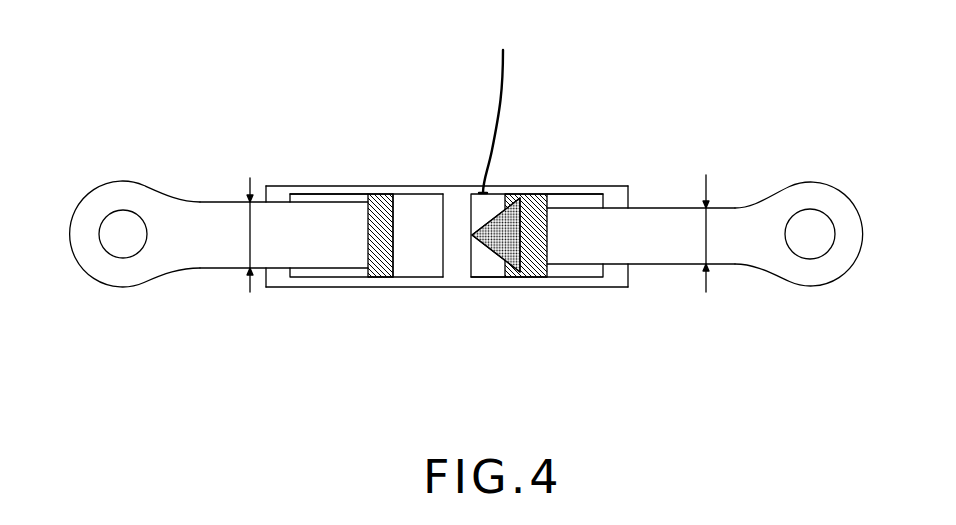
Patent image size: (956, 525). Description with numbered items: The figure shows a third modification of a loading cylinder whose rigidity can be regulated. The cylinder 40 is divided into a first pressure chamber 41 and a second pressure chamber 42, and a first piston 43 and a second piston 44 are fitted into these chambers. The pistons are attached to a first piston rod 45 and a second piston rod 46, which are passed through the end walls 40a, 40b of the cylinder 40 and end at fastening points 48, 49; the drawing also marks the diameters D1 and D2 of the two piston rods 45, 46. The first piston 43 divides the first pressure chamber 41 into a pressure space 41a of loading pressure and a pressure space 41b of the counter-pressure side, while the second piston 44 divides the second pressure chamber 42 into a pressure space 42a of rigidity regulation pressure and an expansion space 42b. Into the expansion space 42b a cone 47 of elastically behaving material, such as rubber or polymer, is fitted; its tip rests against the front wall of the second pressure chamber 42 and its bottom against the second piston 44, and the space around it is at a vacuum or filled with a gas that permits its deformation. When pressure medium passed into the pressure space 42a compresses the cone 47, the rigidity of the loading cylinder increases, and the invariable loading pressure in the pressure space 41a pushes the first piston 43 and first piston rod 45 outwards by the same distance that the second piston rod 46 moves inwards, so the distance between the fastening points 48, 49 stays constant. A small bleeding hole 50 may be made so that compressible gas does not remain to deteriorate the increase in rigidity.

The cylinder 40 is at (457, 198).
The end wall 40a is at (279, 279).
The end wall 40b is at (617, 279).
The first pressure chamber 41 is at (407, 268).
The pressure space of loading pressure 41a is at (414, 234).
The pressure space of counter-pressure side 41b is at (330, 194).
The second pressure chamber 42 is at (574, 270).
The pressure space of rigidity regulation pressure 42a is at (590, 194).
The expansion space 42b is at (485, 268).
The first piston 43 is at (383, 196).
The second piston 44 is at (533, 197).
The first piston rod 45 is at (186, 220).
The second piston rod 46 is at (744, 217).
The cone 47 is at (500, 205).
The fastening point 48 is at (121, 221).
The fastening point 49 is at (813, 194).
The bleeding hole 50 is at (499, 97).
The diameter of first rod D1 is at (250, 190).
The diameter of second rod D2 is at (707, 187).